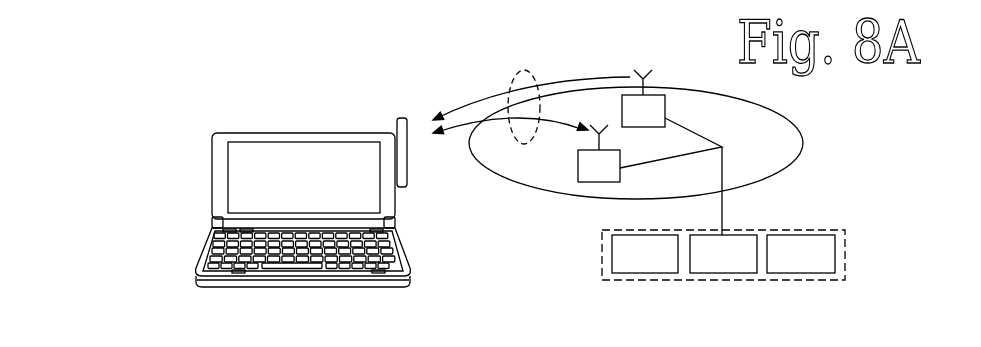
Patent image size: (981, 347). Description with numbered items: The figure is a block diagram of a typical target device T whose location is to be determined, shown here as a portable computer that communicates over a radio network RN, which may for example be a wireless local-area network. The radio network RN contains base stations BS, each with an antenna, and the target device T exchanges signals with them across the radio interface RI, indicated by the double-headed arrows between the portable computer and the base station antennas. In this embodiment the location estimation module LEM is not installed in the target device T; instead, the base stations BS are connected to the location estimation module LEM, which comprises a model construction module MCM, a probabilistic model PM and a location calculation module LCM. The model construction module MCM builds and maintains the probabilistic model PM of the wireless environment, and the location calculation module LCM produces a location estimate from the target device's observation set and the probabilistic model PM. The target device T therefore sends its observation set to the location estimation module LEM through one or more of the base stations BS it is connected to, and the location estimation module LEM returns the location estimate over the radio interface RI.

The target device T is at (212, 162).
The radio interface RI is at (523, 73).
The base station BS is at (621, 126).
The radio network RN is at (773, 175).
The location estimation module LEM is at (602, 253).
The model construction module MCM is at (645, 254).
The probabilistic model PM is at (723, 254).
The location calculation module LCM is at (801, 254).